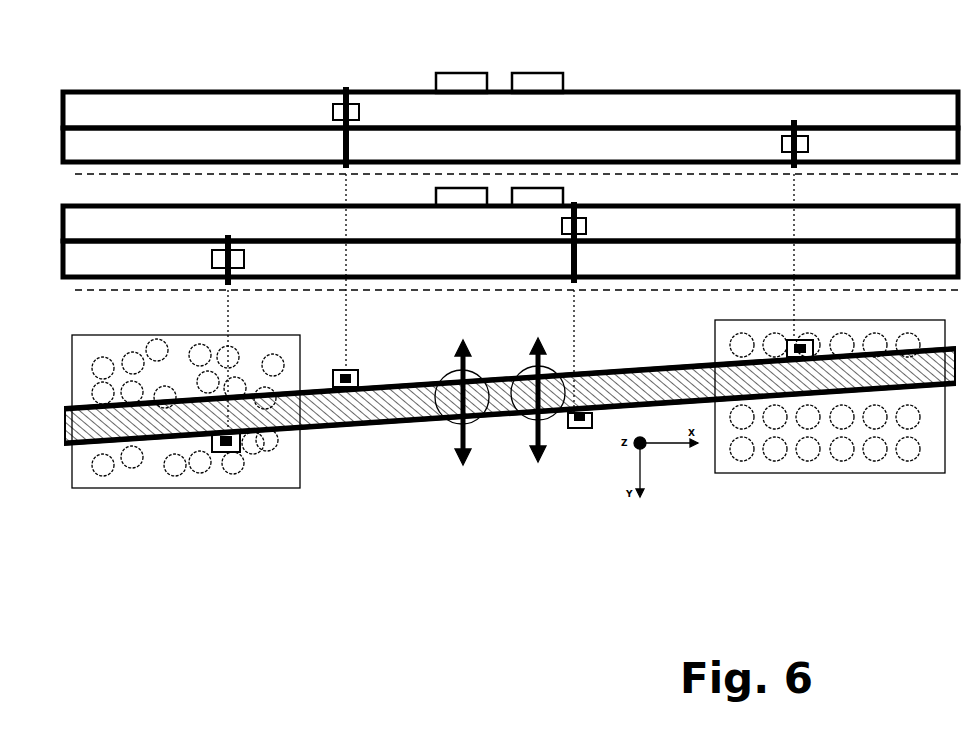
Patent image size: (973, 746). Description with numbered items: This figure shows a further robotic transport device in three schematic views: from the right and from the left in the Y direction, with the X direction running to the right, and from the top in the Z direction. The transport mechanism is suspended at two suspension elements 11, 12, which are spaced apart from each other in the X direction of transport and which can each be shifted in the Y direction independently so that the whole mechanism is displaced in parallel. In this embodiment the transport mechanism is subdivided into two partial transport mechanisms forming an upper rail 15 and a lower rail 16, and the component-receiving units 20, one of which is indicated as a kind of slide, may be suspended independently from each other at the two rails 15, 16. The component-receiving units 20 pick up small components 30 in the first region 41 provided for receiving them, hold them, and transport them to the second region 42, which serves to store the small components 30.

The suspension element 11 is at (458, 84).
The suspension element 12 is at (550, 84).
The upper rail 15 is at (510, 166).
The lower rail 16 is at (510, 202).
The component-receiving unit 20 is at (343, 87).
The small component 30 is at (236, 464).
The first region 41 is at (245, 490).
The second region 42 is at (763, 473).